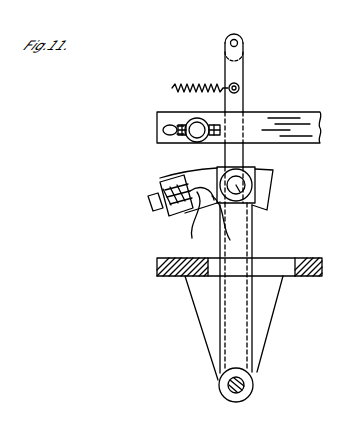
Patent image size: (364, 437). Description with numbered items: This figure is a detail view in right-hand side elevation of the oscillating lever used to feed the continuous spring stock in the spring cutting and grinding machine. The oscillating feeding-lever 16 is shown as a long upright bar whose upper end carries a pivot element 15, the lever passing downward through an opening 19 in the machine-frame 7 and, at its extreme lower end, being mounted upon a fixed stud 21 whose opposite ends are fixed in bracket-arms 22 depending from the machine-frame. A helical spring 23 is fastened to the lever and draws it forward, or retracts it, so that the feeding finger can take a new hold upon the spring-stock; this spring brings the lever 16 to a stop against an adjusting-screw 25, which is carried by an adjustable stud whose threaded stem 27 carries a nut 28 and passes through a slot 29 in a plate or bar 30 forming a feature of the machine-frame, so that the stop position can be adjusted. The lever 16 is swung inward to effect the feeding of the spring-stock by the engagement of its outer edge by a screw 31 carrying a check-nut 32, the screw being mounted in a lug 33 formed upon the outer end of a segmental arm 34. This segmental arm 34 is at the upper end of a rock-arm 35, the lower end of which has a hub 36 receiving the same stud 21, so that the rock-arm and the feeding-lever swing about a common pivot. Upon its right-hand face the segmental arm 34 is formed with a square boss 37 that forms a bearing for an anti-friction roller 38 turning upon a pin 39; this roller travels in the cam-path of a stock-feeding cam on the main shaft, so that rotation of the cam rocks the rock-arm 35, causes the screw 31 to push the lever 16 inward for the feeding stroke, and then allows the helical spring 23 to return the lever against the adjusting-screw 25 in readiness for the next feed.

The machine-frame 7 is at (312, 262).
The pivot pin 15 is at (243, 38).
The oscillating feeding-lever 16 is at (243, 77).
The opening 19 is at (272, 269).
The fixed stud 21 is at (249, 385).
The bracket-arms 22 is at (200, 322).
The helical spring 23 is at (200, 85).
The adjusting-screw 25 is at (226, 128).
The threaded stem 27 is at (192, 136).
The nut 28 is at (185, 145).
The slot 29 is at (163, 131).
The plate or bar 30 is at (239, 127).
The screw 31 is at (210, 221).
The check-nut 32 is at (180, 205).
The lug 33 is at (176, 192).
The segmental arm 34 is at (236, 289).
The rock-arm 35 is at (236, 318).
The hub 36 is at (231, 392).
The square boss 37 is at (253, 200).
The anti-friction roller 38 is at (241, 183).
The pin 39 is at (263, 210).